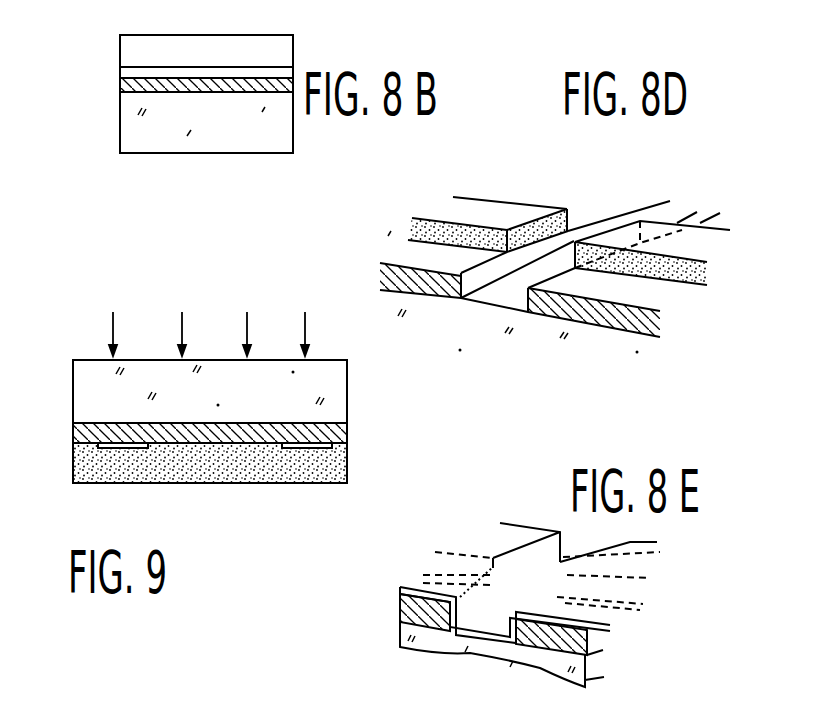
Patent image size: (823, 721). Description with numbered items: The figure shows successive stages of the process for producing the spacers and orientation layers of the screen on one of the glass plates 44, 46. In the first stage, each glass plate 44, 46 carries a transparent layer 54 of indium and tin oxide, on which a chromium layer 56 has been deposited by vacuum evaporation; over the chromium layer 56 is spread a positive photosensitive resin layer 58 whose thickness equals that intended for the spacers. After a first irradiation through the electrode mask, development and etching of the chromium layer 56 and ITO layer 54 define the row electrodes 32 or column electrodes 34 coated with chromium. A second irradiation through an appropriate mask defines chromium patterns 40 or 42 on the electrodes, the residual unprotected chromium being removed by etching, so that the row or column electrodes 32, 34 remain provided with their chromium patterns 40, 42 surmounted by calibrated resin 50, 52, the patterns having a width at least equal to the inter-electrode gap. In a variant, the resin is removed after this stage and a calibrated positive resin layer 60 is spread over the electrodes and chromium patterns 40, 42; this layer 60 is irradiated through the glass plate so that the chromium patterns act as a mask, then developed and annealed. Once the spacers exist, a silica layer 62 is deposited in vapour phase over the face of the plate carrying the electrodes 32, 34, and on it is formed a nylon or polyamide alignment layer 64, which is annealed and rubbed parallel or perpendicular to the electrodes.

In FIG. 8B, the positive photosensitive resin layer 58 is at (130, 51).
In FIG. 8B, the chromium layer 56 is at (122, 74).
In FIG. 8B, the indium and tin oxide layer 54 is at (123, 85).
In FIG. 8B, the glass plate 44 is at (171, 149).
In FIG. 9, the glass plate 44 is at (210, 346).
In FIG. 8B, the glass plate 46 is at (143, 128).
In FIG. 9, the glass plate 46 is at (140, 367).
In FIG. 8D, the resin pattern 50 is at (569, 211).
In FIG. 8D, the resin pattern 52 is at (479, 208).
In FIG. 8D, the chromium pattern 40 is at (583, 218).
In FIG. 9, the chromium pattern 40 is at (215, 486).
In FIG. 8D, the chromium pattern 42 is at (567, 227).
In FIG. 9, the chromium pattern 42 is at (298, 448).
In FIG. 8D, the row electrode 32 is at (550, 306).
In FIG. 9, the row electrode 32 is at (279, 426).
In FIG. 8D, the column electrode 34 is at (443, 297).
In FIG. 9, the column electrode 34 is at (403, 443).
In FIG. 9, the positive resin layer 60 is at (152, 468).
In FIG. 8E, the silica layer 62 is at (428, 602).
In FIG. 8E, the alignment layer 64 is at (402, 588).